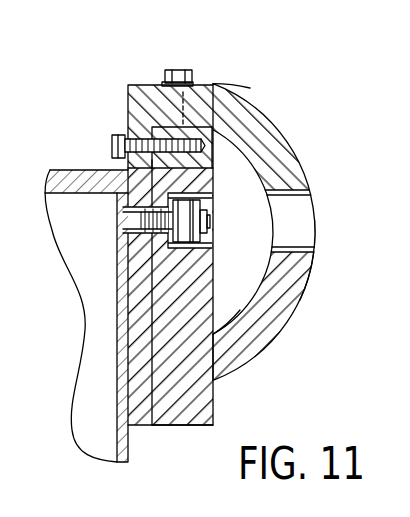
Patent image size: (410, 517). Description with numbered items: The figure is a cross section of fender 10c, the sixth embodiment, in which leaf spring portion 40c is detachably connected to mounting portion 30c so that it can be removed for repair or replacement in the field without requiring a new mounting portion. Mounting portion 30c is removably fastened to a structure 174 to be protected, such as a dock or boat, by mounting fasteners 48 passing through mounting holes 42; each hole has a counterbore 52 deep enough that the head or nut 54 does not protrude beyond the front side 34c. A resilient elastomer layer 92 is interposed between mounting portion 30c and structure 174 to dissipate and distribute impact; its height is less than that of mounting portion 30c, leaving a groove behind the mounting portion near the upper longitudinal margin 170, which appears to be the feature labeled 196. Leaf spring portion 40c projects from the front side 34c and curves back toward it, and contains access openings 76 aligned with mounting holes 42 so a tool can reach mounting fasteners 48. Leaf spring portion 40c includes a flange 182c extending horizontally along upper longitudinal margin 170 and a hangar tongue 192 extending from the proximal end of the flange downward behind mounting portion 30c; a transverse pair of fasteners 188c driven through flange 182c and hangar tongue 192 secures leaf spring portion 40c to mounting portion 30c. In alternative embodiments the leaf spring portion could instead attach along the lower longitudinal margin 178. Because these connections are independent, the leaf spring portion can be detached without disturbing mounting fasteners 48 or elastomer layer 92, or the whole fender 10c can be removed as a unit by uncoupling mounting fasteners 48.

The fender 10c is at (306, 115).
The mounting portion 30c is at (215, 404).
The front side 34c is at (216, 300).
The leaf spring portion 40c is at (302, 292).
The mounting holes 42 is at (150, 226).
The mounting fastener 48 is at (137, 218).
The counterbore 52 is at (212, 239).
The head or nut 54 is at (187, 222).
The access openings 76 is at (295, 223).
The elastomer layer 92 is at (138, 427).
The upper longitudinal margin 170 is at (213, 112).
The structure 174 is at (82, 178).
The lower longitudinal margin 178 is at (188, 439).
The flange 182c is at (205, 84).
The fasteners 188c is at (177, 70).
The hangar tongue 192 is at (127, 120).
The bore 196 is at (156, 166).